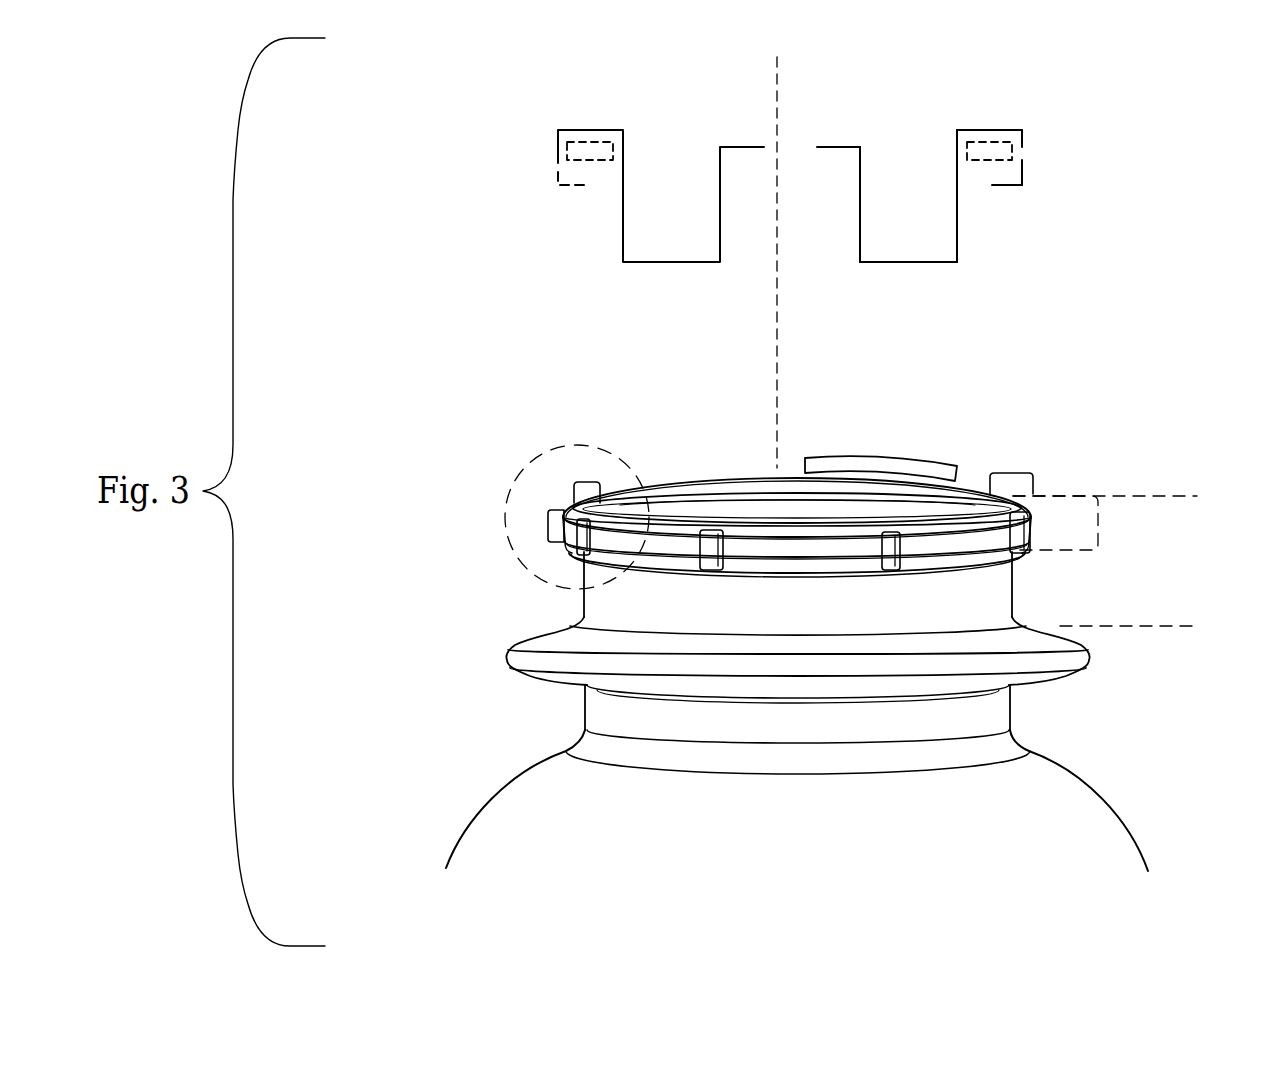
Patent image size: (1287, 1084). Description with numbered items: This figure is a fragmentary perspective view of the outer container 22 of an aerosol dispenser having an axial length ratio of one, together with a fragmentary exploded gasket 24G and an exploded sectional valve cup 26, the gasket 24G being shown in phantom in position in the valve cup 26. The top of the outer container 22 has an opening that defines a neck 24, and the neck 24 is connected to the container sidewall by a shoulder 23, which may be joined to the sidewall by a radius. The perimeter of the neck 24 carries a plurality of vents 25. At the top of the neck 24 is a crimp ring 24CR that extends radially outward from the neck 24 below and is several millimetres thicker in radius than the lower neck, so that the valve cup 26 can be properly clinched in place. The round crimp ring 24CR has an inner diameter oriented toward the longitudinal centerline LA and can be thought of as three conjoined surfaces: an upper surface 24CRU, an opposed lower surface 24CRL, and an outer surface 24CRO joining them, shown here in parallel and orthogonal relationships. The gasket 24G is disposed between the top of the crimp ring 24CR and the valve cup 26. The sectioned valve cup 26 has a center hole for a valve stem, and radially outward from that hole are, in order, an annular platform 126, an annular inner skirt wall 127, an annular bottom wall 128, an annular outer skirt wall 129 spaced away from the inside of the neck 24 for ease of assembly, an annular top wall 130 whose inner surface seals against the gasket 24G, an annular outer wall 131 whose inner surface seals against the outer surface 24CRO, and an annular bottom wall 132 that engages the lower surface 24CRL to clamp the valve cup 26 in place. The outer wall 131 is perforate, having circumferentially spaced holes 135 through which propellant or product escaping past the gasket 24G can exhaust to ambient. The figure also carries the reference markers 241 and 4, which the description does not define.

The outer container 22 is at (428, 729).
The shoulder 23 is at (466, 823).
The neck 24 is at (1197, 496).
The crimp ring 24CR is at (1097, 498).
The upper surface 24CRU is at (588, 479).
The outer surface 24CRO is at (548, 522).
The lower surface 24CRL is at (604, 538).
The gasket 24G is at (588, 141).
The vent 25 is at (699, 530).
The collar opening 241 is at (732, 510).
The valve cup 26 is at (1160, 190).
The annular platform 126 is at (830, 141).
The annular inner skirt wall 127 is at (858, 209).
The annular bottom wall 128 is at (888, 264).
The annular outer skirt wall 129 is at (955, 194).
The annular top wall 130 is at (978, 129).
The annular outer wall 131 is at (1024, 139).
The annular bottom wall 132 is at (1021, 186).
The holes 135 is at (554, 161).
The detail view reference 4 is at (556, 447).
The longitudinal centerline LA is at (777, 247).